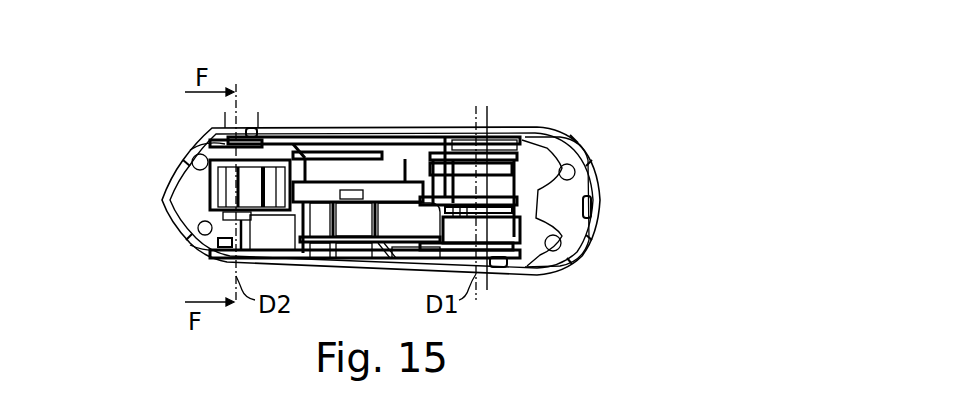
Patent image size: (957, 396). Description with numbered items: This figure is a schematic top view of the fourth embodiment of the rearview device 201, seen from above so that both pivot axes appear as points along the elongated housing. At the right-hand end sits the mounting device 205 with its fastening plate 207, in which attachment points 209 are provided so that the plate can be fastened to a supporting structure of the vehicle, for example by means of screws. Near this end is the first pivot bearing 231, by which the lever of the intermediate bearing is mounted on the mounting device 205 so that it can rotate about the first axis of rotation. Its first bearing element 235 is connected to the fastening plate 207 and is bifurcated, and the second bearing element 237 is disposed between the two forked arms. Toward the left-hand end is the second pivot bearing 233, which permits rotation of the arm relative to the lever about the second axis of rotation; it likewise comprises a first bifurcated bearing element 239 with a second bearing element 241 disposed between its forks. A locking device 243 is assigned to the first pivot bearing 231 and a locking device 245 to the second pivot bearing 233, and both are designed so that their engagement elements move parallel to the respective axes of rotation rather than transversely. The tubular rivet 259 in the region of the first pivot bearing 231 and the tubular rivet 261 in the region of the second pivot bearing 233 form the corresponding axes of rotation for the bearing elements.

The rearview device 201 is at (592, 108).
The mounting device 205 is at (612, 199).
The fastening plate 207 is at (590, 146).
The attachment points 209 is at (195, 248).
The first pivot bearing 231 is at (594, 226).
The second pivot bearing 233 is at (203, 192).
The first bearing element 235 is at (507, 270).
The second bearing element 237 is at (597, 166).
The first bifurcated bearing element 239 is at (210, 224).
The second bearing element 241 is at (192, 158).
The locking device 243 is at (461, 116).
The locking device 245 is at (275, 122).
The tubular rivet 259 is at (489, 140).
The tubular rivet 261 is at (248, 128).